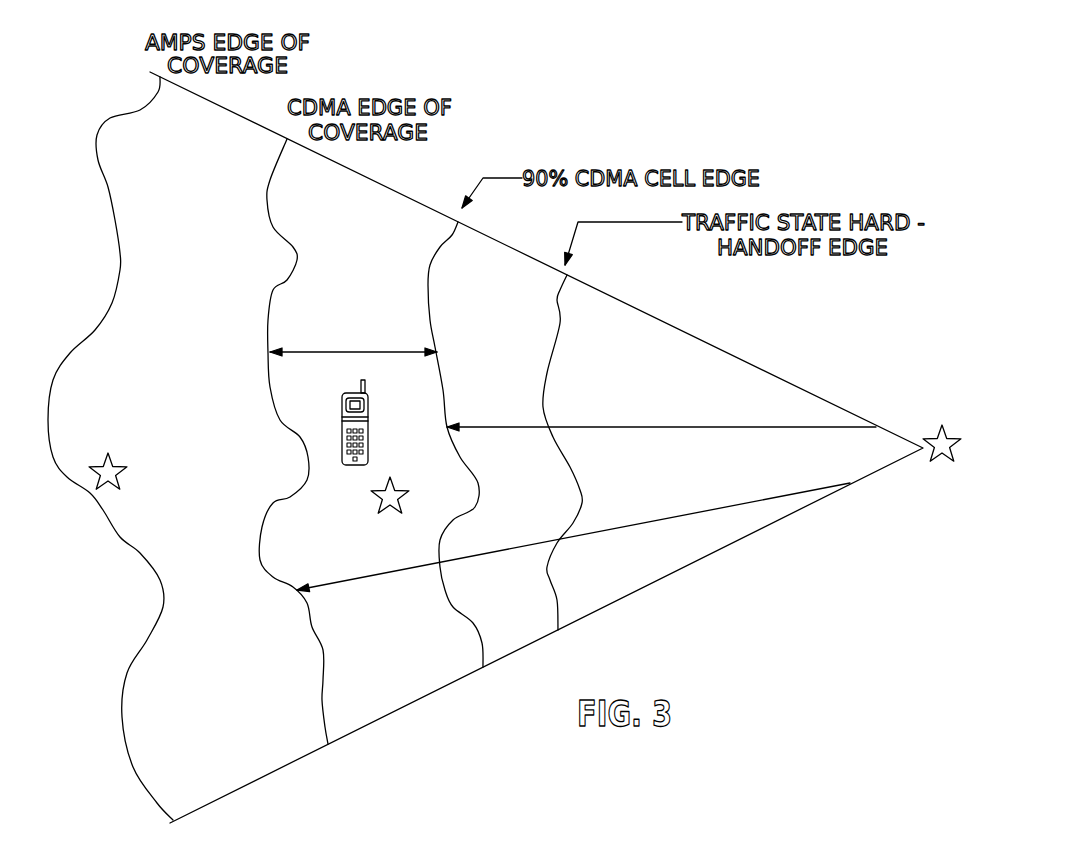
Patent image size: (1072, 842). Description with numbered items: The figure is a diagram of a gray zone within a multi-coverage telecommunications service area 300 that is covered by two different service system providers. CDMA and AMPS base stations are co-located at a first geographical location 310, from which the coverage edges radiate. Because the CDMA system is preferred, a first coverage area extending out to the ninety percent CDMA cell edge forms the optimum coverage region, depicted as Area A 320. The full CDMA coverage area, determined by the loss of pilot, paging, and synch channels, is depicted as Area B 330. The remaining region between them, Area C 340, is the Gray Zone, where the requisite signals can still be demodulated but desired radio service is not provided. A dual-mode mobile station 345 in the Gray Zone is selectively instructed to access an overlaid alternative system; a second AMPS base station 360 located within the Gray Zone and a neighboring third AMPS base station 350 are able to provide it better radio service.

The service area 300 is at (597, 93).
The first geographical location 310 is at (942, 427).
The Area A 320 is at (722, 426).
The Area B 330 is at (730, 507).
The Area C 340 is at (407, 350).
The dual-mode mobile station 345 is at (342, 405).
The third AMPS base station 350 is at (108, 455).
The second AMPS base station 360 is at (392, 482).